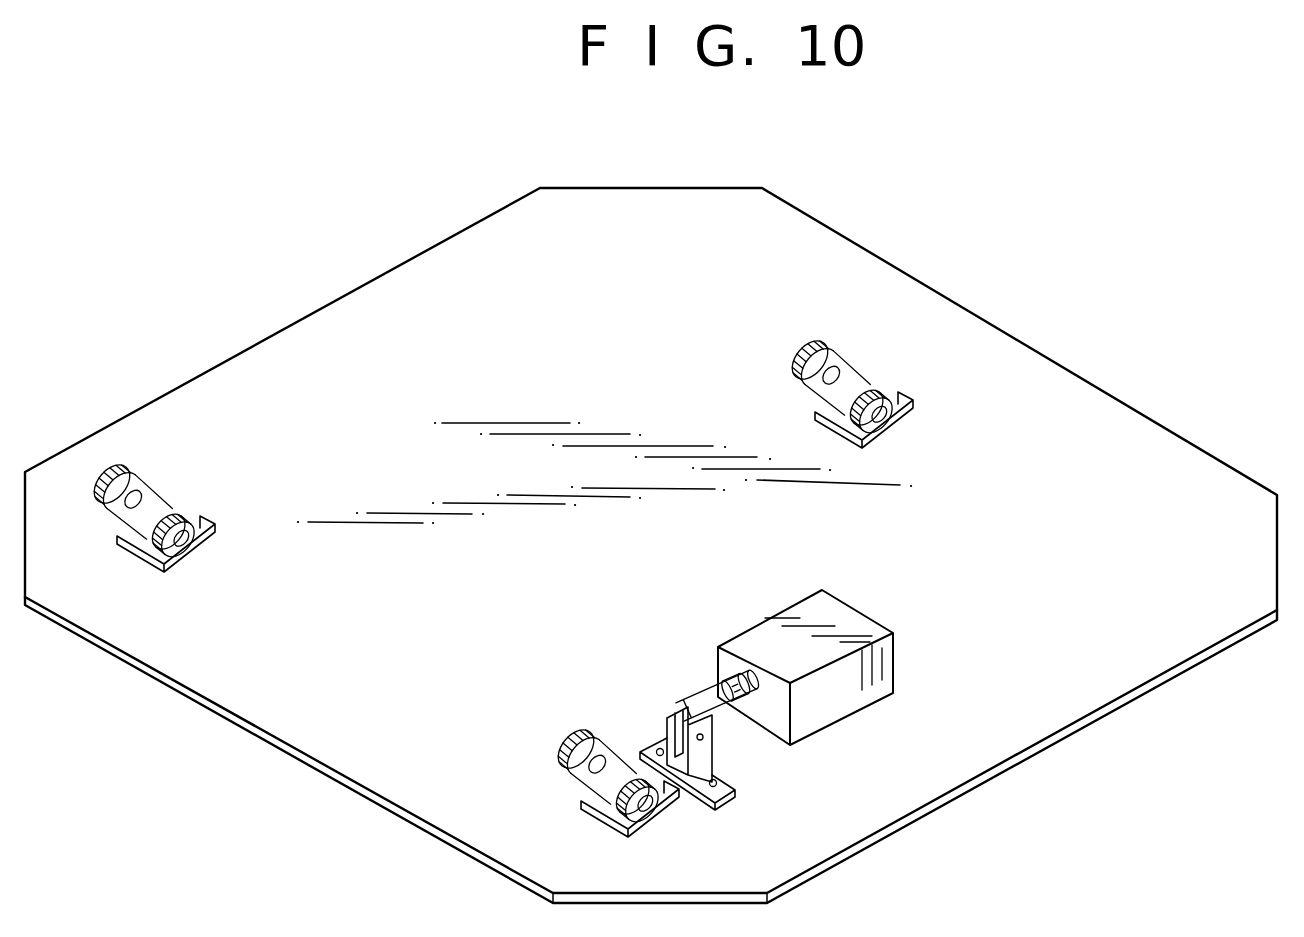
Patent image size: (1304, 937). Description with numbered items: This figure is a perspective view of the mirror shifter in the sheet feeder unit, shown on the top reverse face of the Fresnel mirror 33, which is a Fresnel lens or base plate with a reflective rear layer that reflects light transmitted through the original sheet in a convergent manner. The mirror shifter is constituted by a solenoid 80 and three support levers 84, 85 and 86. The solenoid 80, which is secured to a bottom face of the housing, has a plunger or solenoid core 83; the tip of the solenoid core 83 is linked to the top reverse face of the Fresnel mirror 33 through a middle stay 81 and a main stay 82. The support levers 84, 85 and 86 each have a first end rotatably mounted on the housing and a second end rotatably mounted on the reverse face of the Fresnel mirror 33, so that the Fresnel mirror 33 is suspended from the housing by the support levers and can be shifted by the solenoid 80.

The Fresnel mirror 33 is at (1078, 703).
The solenoid 80 is at (853, 618).
The middle stay 81 is at (710, 712).
The main stay 82 is at (730, 797).
The solenoid core 83 is at (757, 713).
The support lever 84 is at (160, 498).
The support lever 85 is at (577, 738).
The support lever 86 is at (790, 367).